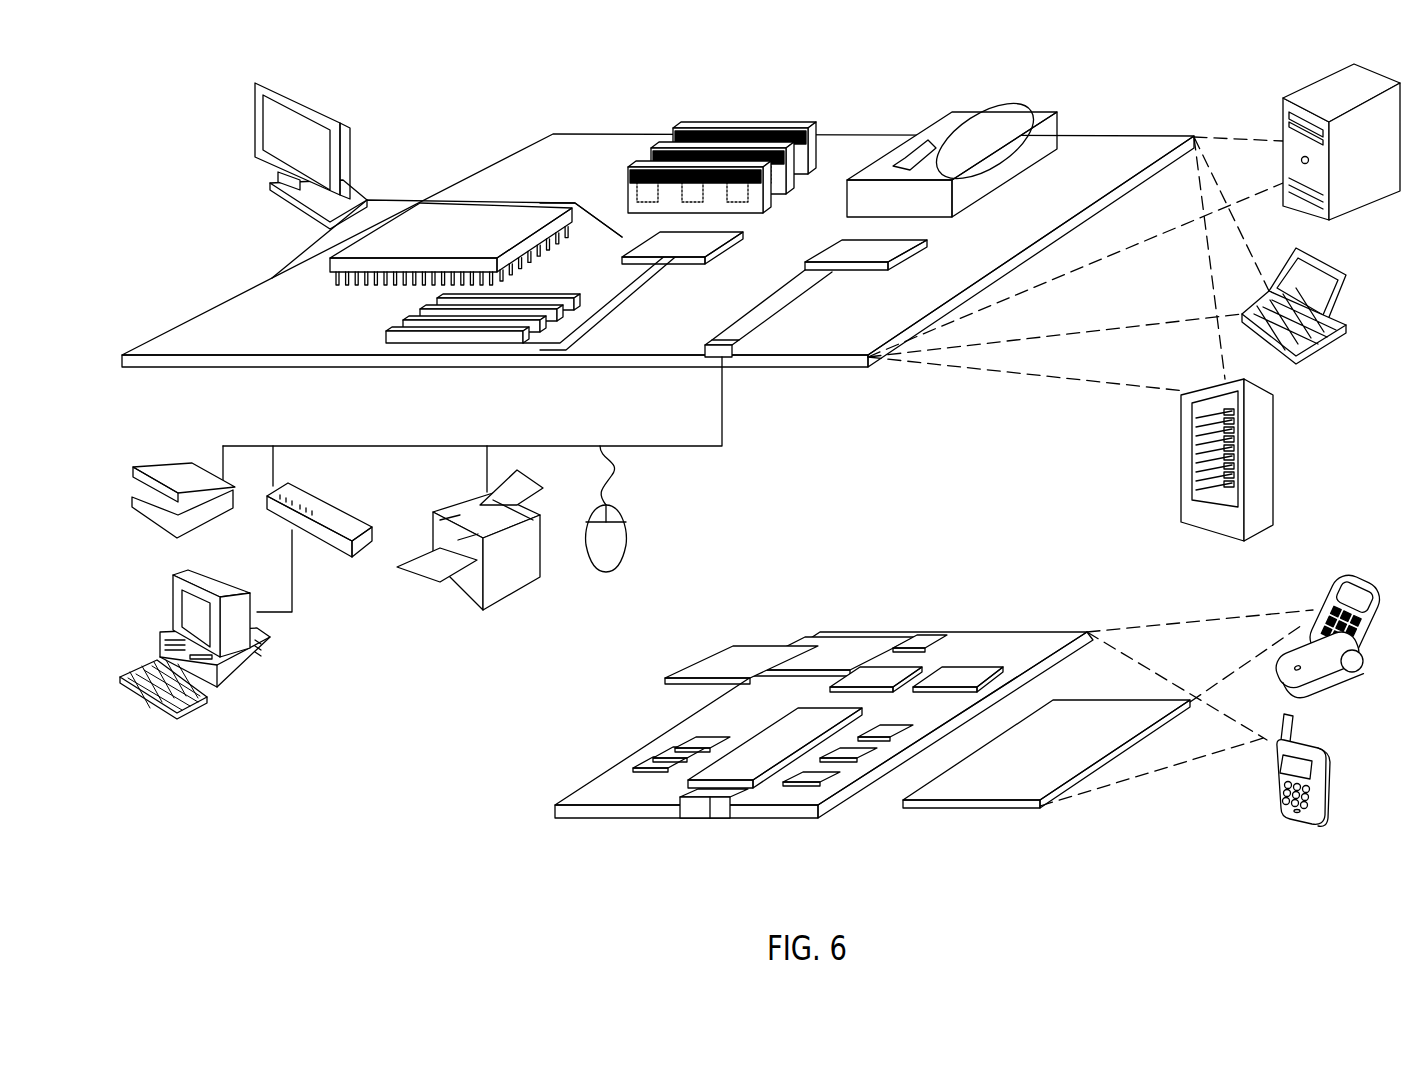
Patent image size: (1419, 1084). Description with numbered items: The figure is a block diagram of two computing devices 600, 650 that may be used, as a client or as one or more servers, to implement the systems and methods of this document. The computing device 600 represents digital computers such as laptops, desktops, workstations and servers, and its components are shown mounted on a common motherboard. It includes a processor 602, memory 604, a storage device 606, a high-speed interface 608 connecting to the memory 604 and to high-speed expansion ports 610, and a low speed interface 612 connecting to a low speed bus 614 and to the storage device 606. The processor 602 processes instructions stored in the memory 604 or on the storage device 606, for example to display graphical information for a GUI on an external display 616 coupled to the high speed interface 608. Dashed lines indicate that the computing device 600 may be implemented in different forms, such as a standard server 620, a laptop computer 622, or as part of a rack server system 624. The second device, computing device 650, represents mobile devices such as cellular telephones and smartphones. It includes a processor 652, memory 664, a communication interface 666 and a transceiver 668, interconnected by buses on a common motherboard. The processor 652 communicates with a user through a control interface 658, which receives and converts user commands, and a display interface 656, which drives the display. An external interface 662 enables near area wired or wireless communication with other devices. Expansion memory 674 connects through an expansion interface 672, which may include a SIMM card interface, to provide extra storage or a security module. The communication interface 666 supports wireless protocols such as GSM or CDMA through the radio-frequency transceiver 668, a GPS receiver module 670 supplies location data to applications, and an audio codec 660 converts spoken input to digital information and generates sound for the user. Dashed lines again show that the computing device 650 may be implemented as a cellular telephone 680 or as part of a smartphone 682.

The computing device 600 is at (468, 104).
The processor 602 is at (330, 264).
The memory 604 is at (690, 128).
The storage device 606 is at (944, 112).
The high-speed interface 608 is at (657, 243).
The high-speed expansion ports 610 is at (410, 323).
The low speed interface 612 is at (833, 250).
The low speed bus 614 is at (737, 357).
The display 616 is at (258, 78).
The standard server 620 is at (1283, 118).
The laptop computer 622 is at (1354, 276).
The rack server system 624 is at (1181, 484).
The computing device 650 is at (524, 822).
The processor 652 is at (747, 770).
The display interface 656 is at (817, 780).
The control interface 658 is at (883, 730).
The audio codec 660 is at (887, 733).
The external interface 662 is at (710, 803).
The memory 664 is at (650, 763).
The communication interface 666 is at (877, 670).
The transceiver 668 is at (960, 670).
The GPS receiver module 670 is at (927, 640).
The expansion interface 672 is at (793, 645).
The expansion memory 674 is at (707, 645).
The cellular telephone 680 is at (1340, 588).
The smartphone 682 is at (1275, 773).